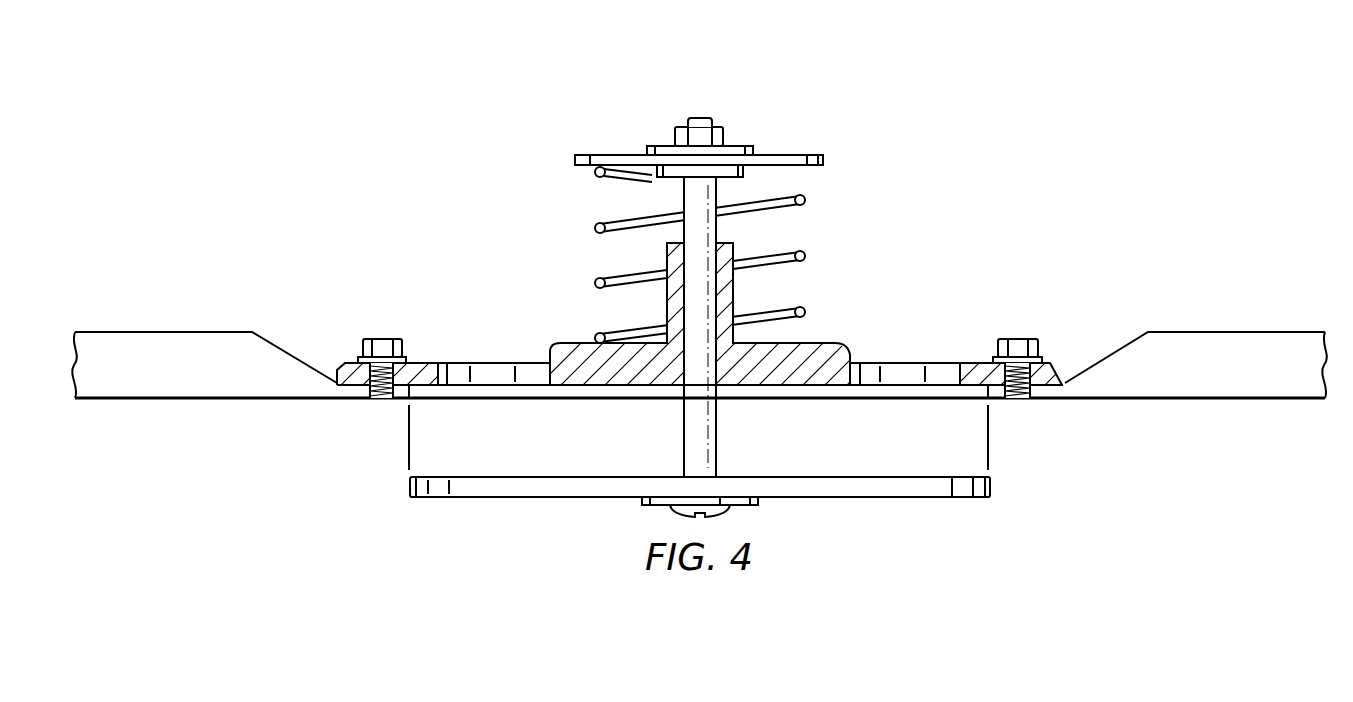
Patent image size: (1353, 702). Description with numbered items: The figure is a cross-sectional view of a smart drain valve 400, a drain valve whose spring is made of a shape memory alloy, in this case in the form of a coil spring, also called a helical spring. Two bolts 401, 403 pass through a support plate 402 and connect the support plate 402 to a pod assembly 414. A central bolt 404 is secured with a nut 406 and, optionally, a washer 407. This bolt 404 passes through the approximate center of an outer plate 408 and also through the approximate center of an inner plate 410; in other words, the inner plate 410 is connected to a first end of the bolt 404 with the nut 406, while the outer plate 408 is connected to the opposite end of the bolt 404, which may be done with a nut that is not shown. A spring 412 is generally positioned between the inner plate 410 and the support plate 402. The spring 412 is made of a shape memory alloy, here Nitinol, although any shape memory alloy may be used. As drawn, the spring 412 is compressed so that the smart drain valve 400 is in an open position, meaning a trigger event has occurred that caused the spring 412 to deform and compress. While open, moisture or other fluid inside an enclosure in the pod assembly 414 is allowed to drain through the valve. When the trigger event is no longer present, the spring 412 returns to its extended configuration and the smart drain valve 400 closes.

The smart drain valve 400 is at (524, 92).
The bolt 401 is at (1019, 338).
The support plate 402 is at (836, 342).
The bolt 403 is at (379, 338).
The bolt 404 is at (700, 118).
The nut 406 is at (675, 138).
The washer 407 is at (741, 146).
The outer plate 408 is at (531, 498).
The inner plate 410 is at (826, 160).
The spring 412 is at (596, 224).
The pod assembly 414 is at (1186, 331).